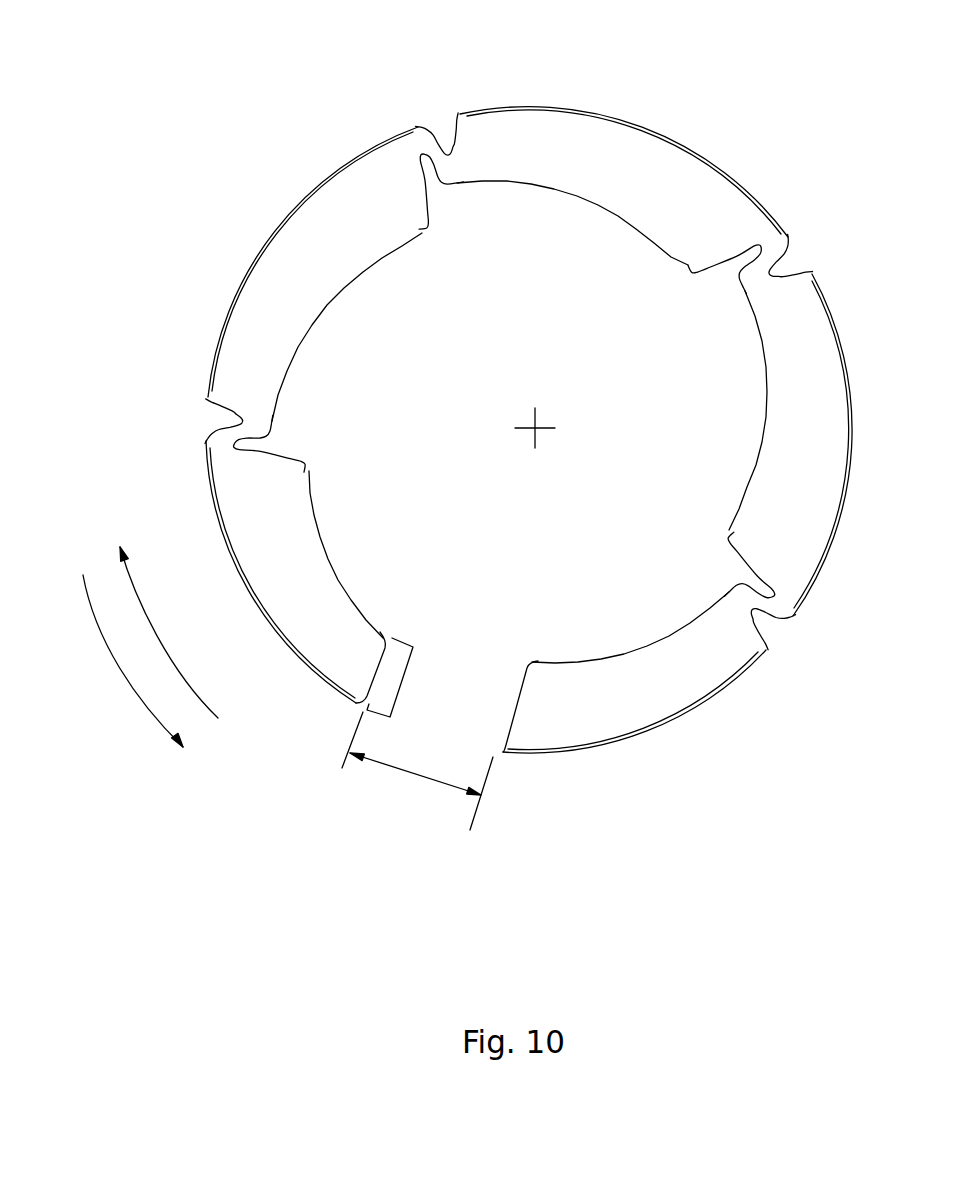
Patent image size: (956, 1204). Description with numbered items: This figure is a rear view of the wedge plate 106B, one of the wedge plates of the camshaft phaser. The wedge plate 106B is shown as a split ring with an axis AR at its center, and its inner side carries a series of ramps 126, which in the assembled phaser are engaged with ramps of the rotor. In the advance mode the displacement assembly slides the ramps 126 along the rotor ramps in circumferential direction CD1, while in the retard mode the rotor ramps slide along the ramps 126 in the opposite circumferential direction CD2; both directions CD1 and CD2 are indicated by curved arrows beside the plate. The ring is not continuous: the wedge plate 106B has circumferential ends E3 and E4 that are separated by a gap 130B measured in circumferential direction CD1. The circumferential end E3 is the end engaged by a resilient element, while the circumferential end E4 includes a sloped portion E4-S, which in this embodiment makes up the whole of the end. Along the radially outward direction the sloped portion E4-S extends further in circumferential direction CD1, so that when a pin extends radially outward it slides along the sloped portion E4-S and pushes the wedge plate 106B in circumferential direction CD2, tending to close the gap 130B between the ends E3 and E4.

The wedge plate 106B is at (752, 70).
The ramps 126 is at (410, 237).
The axis of rotation AR is at (535, 425).
The circumferential direction CD2 is at (140, 600).
The circumferential direction CD1 is at (135, 688).
The circumferential end E4 is at (353, 680).
The sloped portion E4-S is at (403, 678).
The gap 130B is at (418, 777).
The circumferential end E3 is at (521, 740).